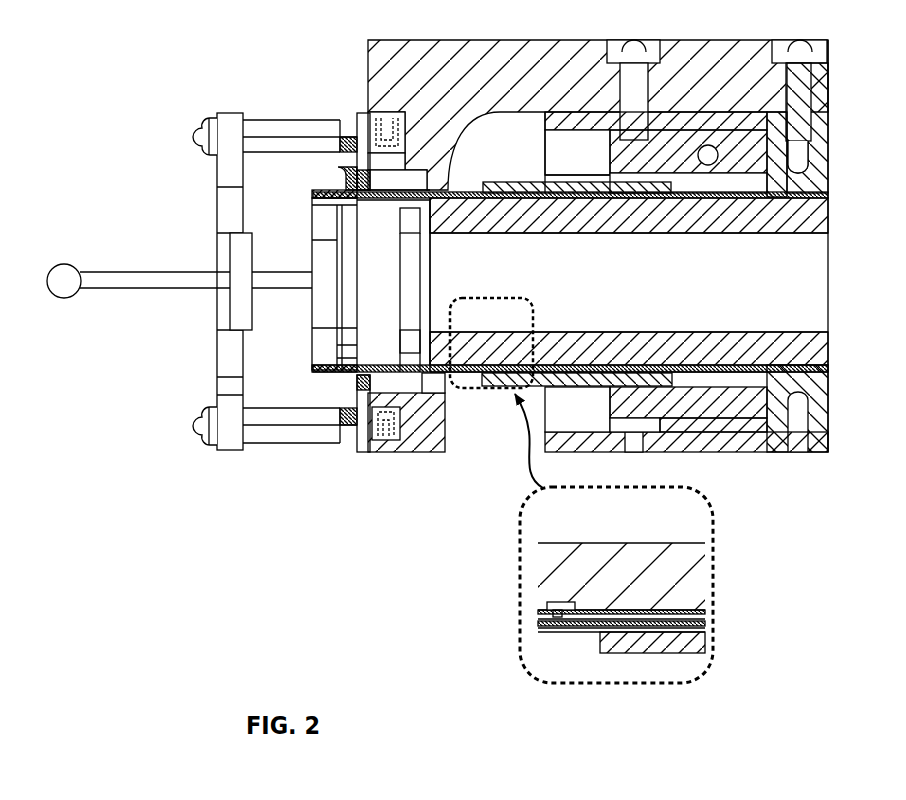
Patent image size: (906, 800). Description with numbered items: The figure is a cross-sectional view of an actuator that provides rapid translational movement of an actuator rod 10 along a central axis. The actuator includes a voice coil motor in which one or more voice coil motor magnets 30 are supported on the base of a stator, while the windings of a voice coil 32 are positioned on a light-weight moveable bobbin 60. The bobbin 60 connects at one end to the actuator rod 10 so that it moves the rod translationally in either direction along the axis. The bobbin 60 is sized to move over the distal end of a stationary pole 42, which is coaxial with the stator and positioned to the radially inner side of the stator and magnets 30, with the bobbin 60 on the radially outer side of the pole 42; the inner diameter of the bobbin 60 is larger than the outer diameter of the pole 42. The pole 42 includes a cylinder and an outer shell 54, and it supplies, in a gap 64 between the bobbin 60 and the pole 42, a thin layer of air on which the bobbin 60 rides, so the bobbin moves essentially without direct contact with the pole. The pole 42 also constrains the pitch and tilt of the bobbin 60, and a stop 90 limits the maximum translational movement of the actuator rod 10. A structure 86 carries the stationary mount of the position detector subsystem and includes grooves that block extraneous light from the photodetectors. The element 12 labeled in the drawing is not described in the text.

The actuator rod 10 is at (113, 271).
The plunger 12 is at (305, 202).
The voice coil motor magnet 30 is at (575, 418).
The voice coil 32 is at (543, 179).
The stationary pole 42 is at (807, 268).
The outer shell 54 is at (534, 611).
The bobbin 60 is at (458, 376).
The gap 64 is at (710, 622).
The structure 86 is at (733, 39).
The stop 90 is at (198, 425).